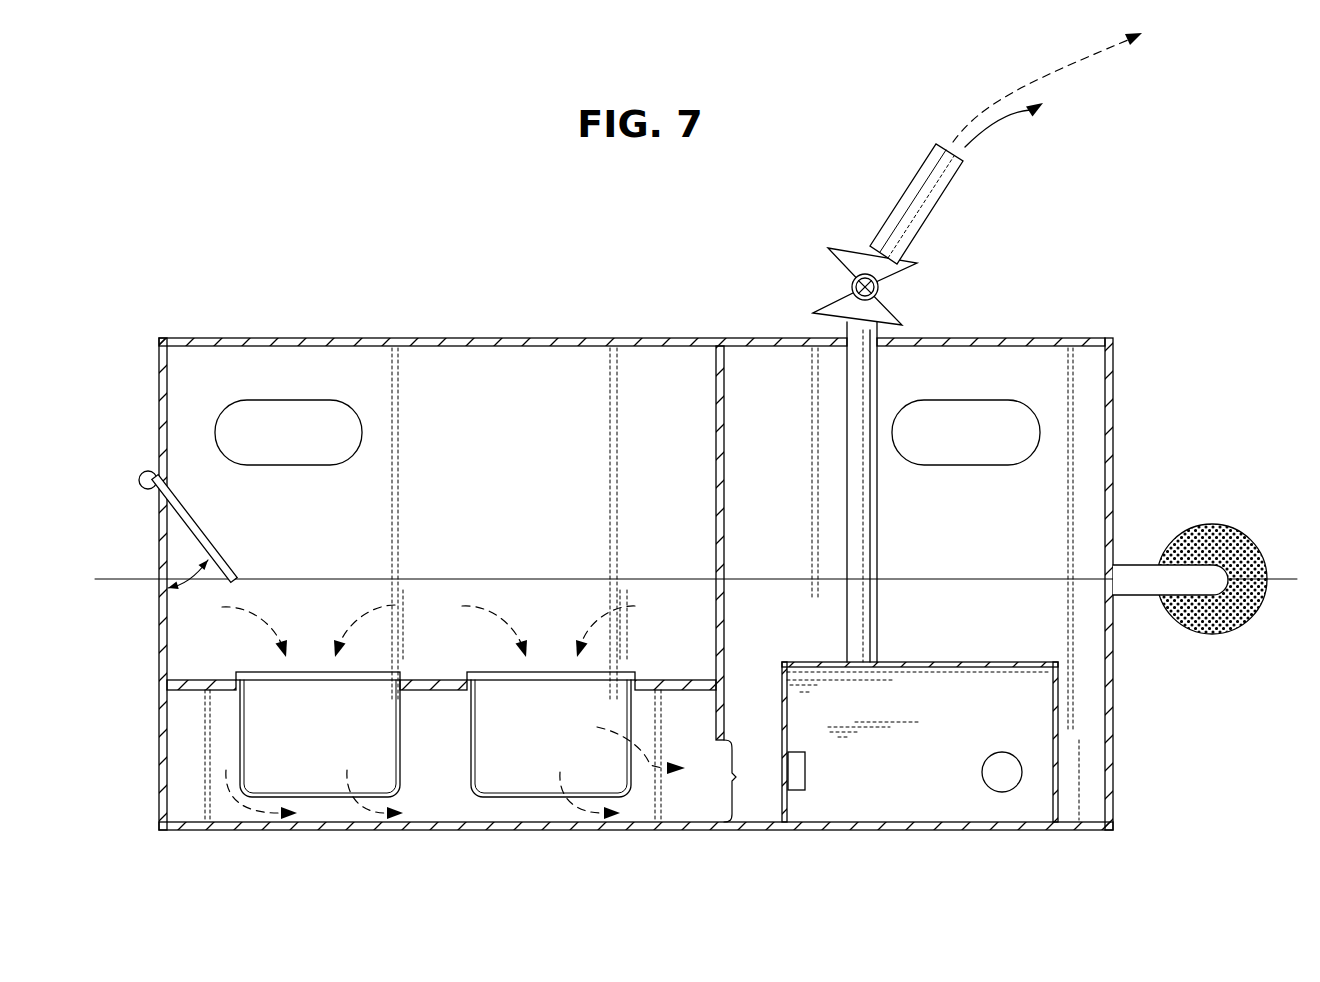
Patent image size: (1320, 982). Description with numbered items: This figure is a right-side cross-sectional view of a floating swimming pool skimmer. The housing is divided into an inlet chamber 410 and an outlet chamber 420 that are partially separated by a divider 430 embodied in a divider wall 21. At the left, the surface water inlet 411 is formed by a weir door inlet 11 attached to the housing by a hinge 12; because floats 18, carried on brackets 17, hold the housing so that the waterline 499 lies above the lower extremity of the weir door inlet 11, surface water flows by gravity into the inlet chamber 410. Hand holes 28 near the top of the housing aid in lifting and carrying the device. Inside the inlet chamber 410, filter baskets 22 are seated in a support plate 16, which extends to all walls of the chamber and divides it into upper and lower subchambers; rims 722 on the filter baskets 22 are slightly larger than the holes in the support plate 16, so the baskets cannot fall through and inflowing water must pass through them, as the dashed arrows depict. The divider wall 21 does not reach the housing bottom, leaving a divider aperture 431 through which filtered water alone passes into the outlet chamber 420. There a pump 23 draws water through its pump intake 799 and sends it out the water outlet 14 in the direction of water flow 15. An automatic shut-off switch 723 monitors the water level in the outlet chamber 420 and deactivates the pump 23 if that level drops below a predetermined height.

The weir door inlet 11 is at (208, 533).
The hinge 12 is at (140, 477).
The water outlet 14 is at (945, 146).
The direction of water flow 15 is at (1047, 90).
The support plate 16 is at (203, 688).
The bracket 17 is at (1190, 582).
The float 18 is at (1207, 525).
The divider wall 21 is at (717, 362).
The filter basket 22 is at (302, 672).
The pump 23 is at (898, 761).
The hand hole 28 is at (266, 400).
The inlet chamber 410 is at (493, 436).
The surface water inlet 411 is at (126, 556).
The outlet chamber 420 is at (938, 550).
The divider 430 is at (680, 388).
The divider aperture 431 is at (758, 778).
The waterline 499 is at (1282, 578).
The rim 722 is at (235, 674).
The automatic shut-off switch 723 is at (1002, 792).
The pump intake 799 is at (806, 772).